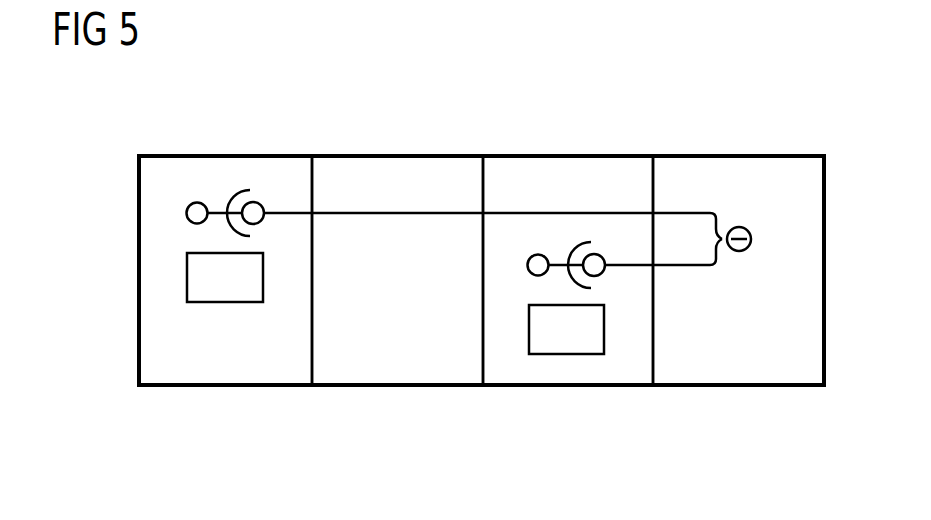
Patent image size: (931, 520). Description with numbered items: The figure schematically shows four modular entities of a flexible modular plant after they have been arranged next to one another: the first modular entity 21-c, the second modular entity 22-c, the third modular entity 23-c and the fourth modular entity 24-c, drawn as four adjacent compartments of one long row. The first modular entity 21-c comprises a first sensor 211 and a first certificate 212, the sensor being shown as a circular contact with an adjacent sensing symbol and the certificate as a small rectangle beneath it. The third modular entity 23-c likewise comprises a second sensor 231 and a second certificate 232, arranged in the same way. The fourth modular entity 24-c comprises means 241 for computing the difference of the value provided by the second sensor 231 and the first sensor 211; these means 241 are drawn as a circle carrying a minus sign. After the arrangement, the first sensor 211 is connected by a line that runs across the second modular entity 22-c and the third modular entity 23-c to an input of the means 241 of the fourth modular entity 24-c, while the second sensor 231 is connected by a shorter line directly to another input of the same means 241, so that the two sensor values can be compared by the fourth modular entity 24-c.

The first modular entity 21-c is at (278, 386).
The second modular entity 22-c is at (393, 386).
The third modular entity 23-c is at (620, 386).
The fourth modular entity 24-c is at (738, 386).
The first sensor 211 is at (199, 202).
The first certificate 212 is at (207, 302).
The second sensor 231 is at (539, 254).
The second certificate 232 is at (550, 354).
The means for computing the difference 241 is at (740, 227).